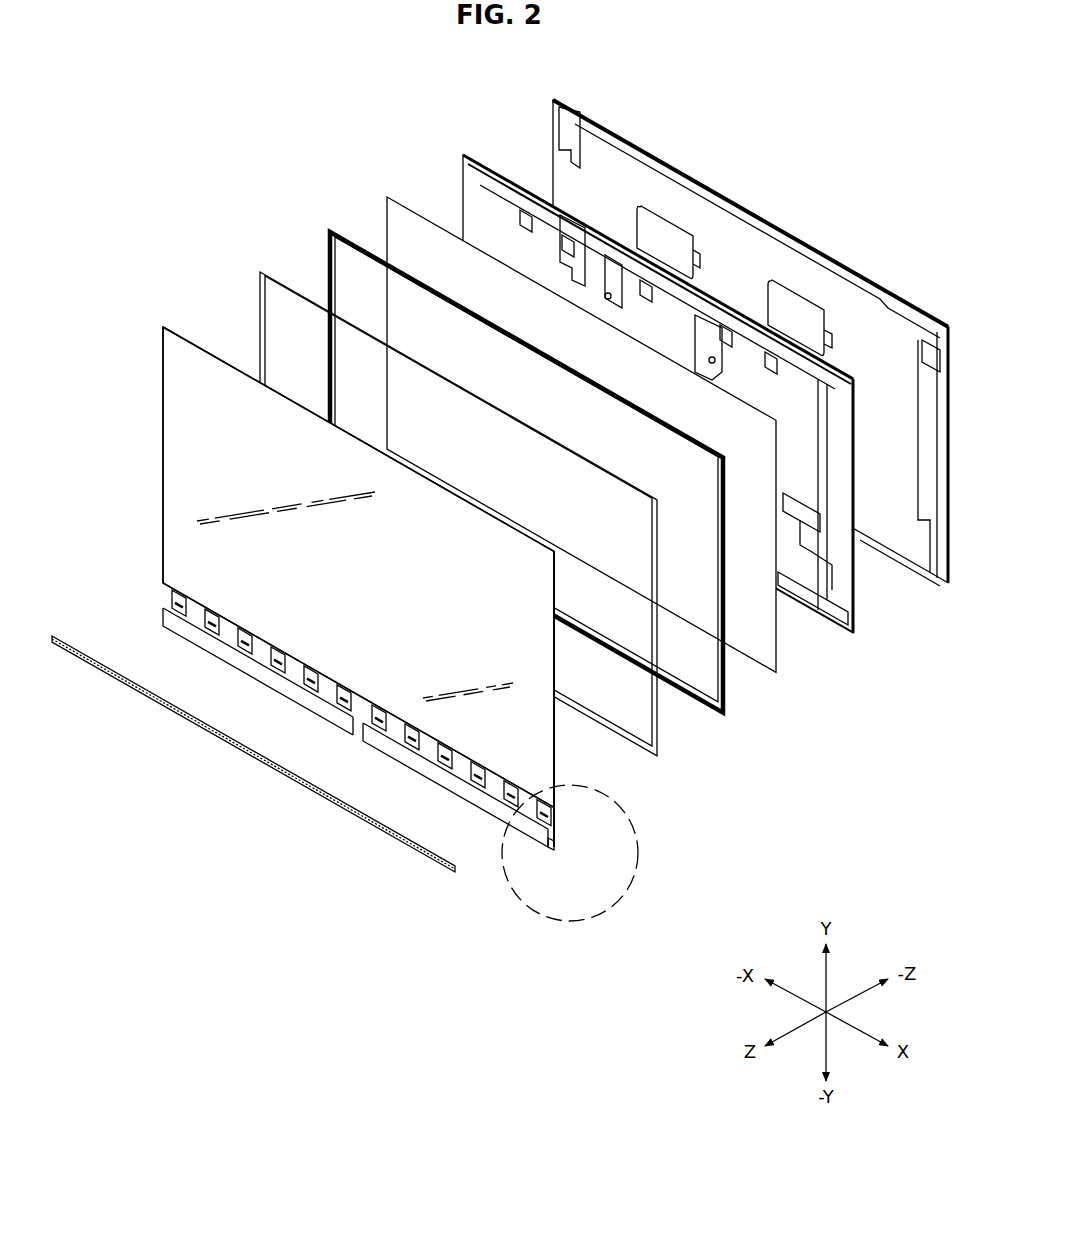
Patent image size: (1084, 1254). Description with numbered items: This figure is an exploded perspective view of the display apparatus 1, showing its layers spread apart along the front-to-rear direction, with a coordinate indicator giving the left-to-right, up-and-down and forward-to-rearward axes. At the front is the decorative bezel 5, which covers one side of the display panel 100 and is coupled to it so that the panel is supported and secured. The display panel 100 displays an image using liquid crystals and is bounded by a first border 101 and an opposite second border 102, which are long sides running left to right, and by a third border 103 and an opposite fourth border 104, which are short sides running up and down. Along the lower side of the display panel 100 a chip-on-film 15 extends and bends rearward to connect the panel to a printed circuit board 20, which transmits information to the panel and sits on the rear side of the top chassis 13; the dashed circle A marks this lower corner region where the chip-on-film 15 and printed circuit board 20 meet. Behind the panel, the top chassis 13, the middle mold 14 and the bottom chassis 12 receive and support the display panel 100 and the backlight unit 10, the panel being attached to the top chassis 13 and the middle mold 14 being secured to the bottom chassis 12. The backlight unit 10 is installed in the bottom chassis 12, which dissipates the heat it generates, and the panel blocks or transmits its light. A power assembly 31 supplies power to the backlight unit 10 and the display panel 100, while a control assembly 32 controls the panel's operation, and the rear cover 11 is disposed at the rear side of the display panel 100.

The display apparatus 1 is at (238, 106).
The decorative bezel 5 is at (310, 800).
The backlight unit (BLU) 10 is at (778, 660).
The rear cover 11 is at (880, 296).
The bottom chassis 12 is at (681, 378).
The top chassis 13 is at (658, 748).
The middle mold 14 is at (725, 706).
The chip-on-film (COF) 15 is at (555, 818).
The printed circuit board (PCB) 20 is at (548, 850).
The power assembly 31 is at (798, 300).
The control assembly 32 is at (675, 218).
The display panel 100 is at (358, 595).
The first border 101 is at (360, 700).
The second border 102 is at (225, 362).
The third border 103 is at (163, 505).
The fourth border 104 is at (555, 752).
The enlarged region A is at (640, 838).